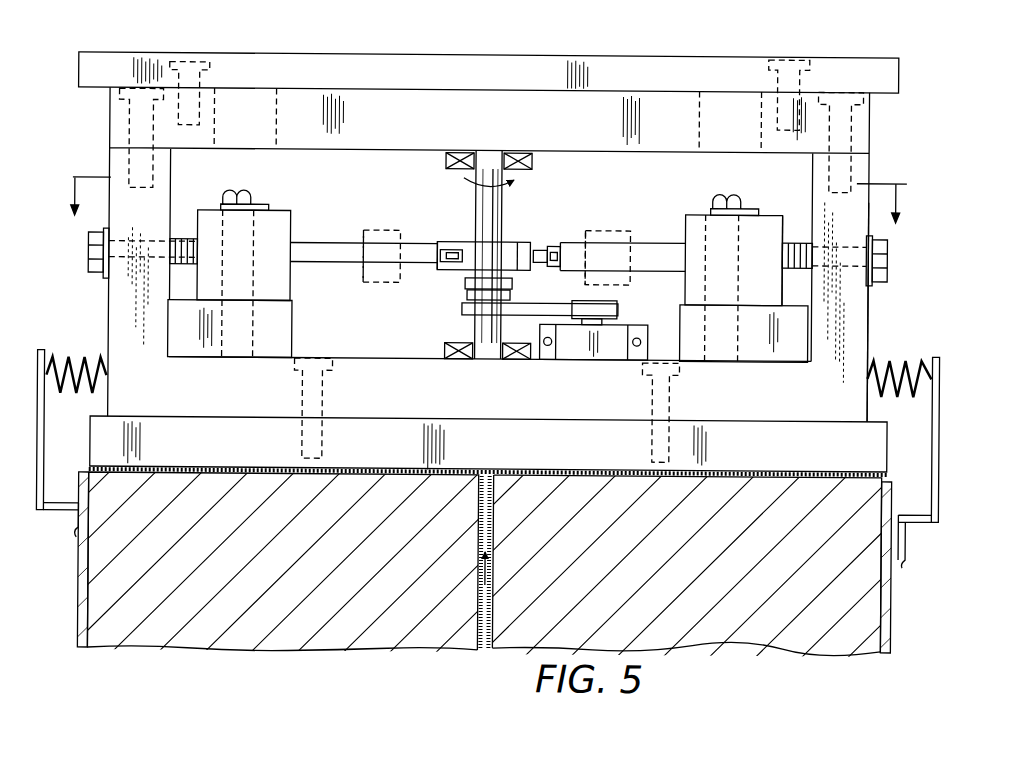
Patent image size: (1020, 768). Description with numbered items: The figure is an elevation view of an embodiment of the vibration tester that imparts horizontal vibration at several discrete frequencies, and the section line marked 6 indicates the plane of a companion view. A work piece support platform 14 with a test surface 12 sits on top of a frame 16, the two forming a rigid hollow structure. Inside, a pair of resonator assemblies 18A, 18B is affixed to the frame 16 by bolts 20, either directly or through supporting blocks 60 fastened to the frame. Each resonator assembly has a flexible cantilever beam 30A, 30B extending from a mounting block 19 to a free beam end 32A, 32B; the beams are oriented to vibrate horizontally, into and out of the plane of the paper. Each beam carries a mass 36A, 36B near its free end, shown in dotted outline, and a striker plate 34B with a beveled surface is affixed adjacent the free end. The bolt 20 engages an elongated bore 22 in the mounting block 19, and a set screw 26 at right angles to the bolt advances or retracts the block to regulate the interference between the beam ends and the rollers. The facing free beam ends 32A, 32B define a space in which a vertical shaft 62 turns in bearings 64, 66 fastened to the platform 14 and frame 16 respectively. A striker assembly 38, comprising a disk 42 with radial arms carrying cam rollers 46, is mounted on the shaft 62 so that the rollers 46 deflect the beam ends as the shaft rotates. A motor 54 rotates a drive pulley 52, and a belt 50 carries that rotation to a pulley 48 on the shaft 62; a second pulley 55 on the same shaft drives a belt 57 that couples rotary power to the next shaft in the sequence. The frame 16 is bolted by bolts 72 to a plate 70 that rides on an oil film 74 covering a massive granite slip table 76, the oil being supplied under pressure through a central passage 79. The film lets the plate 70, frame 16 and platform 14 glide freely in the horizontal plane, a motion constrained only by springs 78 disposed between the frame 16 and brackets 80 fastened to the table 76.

The section line 6- 6 is at (484, 186).
The test surface 12 is at (571, 52).
The work piece support platform 14 is at (633, 54).
The frame 16 is at (868, 318).
The resonator assembly 18A is at (353, 293).
The resonator assembly 18B is at (677, 205).
The mounting block 19 is at (766, 215).
The bolt 20 is at (260, 233).
The bore 22 is at (757, 303).
The set screw 26 is at (788, 243).
The cantilever beam 30A is at (316, 243).
The cantilever beam 30B is at (665, 242).
The free beam end 32A is at (437, 243).
The free beam end 32B is at (546, 243).
The striker plate 34B is at (562, 243).
The mass 36A is at (364, 231).
The mass 36B is at (627, 231).
The striker assembly 38 is at (528, 230).
The disk 42 is at (485, 251).
The cam roller 46 is at (437, 258).
The pulley 48 is at (463, 312).
The belt 50 is at (603, 320).
The drive pulley 52 is at (612, 307).
The motor 54 is at (598, 350).
The pulley 55 is at (466, 296).
The belt 57 is at (466, 283).
The supporting block 60 is at (294, 338).
The vertical shaft 62 is at (482, 192).
The bearing 64 is at (516, 153).
The bearing 66 is at (517, 360).
The plate 70 is at (602, 456).
The bolt 72 is at (322, 386).
The oil film 74 is at (330, 462).
The slip table 76 is at (318, 654).
The spring 78 is at (98, 360).
The passage 79 is at (481, 653).
The bracket 80 is at (45, 458).